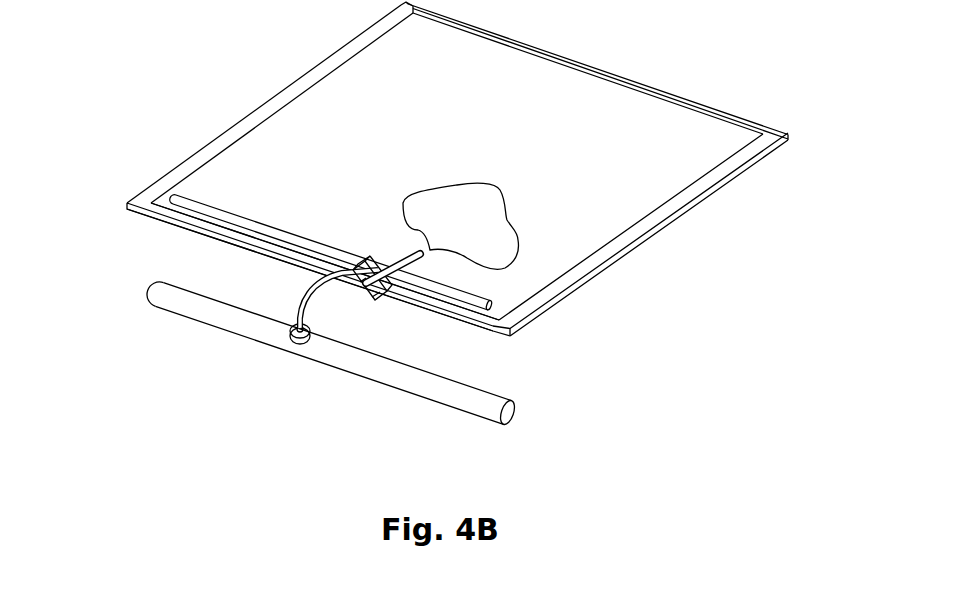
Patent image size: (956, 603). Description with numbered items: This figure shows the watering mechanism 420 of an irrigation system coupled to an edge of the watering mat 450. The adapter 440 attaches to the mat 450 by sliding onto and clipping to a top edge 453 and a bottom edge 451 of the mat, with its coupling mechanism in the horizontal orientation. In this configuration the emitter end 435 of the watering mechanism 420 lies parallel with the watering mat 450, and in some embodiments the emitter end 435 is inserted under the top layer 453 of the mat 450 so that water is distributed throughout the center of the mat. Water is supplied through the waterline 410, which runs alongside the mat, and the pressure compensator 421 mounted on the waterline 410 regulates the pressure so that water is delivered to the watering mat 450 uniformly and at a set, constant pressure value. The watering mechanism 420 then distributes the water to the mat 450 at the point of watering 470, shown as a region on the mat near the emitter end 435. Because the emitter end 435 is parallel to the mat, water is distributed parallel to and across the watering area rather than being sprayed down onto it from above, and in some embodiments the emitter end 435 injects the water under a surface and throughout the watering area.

The waterline 410 is at (397, 383).
The watering mechanism 420 is at (292, 292).
The pressure compensator 421 is at (312, 310).
The emitter end 435 is at (412, 283).
The adapter 440 is at (407, 312).
The watering mat 450 is at (198, 138).
The bottom edge 451 is at (181, 240).
The top edge 453 is at (185, 212).
The point of watering 470 is at (506, 221).